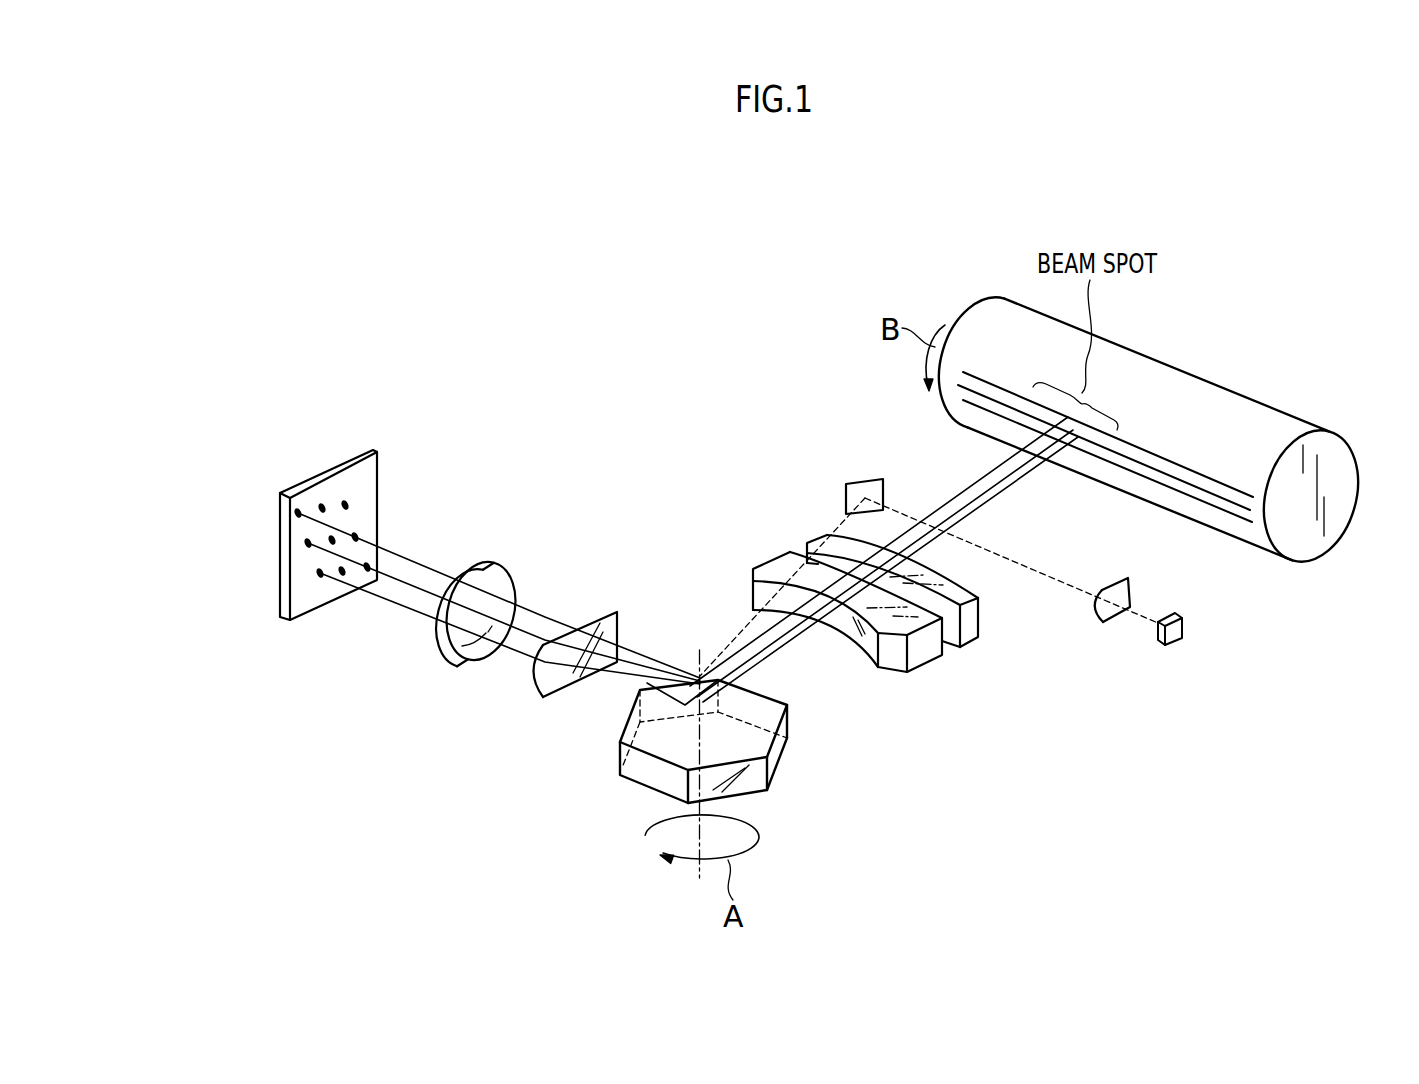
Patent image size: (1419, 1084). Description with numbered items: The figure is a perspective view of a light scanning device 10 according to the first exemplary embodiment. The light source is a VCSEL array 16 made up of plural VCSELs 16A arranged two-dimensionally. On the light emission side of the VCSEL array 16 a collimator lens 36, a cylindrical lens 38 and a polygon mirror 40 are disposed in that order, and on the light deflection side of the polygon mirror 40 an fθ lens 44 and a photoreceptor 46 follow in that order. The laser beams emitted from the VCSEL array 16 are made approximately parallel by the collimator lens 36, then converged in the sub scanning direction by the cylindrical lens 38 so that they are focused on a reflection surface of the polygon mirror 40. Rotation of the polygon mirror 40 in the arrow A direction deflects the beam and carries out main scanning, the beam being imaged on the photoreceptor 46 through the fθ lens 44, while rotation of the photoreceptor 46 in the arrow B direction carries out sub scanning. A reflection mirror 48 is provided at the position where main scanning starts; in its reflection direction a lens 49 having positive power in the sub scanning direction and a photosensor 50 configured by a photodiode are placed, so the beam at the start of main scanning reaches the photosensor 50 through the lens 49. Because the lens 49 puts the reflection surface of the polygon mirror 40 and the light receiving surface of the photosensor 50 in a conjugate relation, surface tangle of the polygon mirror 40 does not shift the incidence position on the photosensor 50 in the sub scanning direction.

The light scanning device 10 is at (683, 288).
The VCSEL array 16 is at (340, 468).
The VCSELs 16A is at (296, 513).
The collimator lens 36 is at (495, 563).
The cylindrical lens 38 is at (595, 612).
The polygon mirror 40 is at (781, 759).
The fθ lens 44 is at (988, 648).
The photoreceptor 46 is at (1288, 413).
The reflection mirror 48 is at (862, 480).
The lens 49 is at (1130, 592).
The photosensor 50 is at (1184, 623).